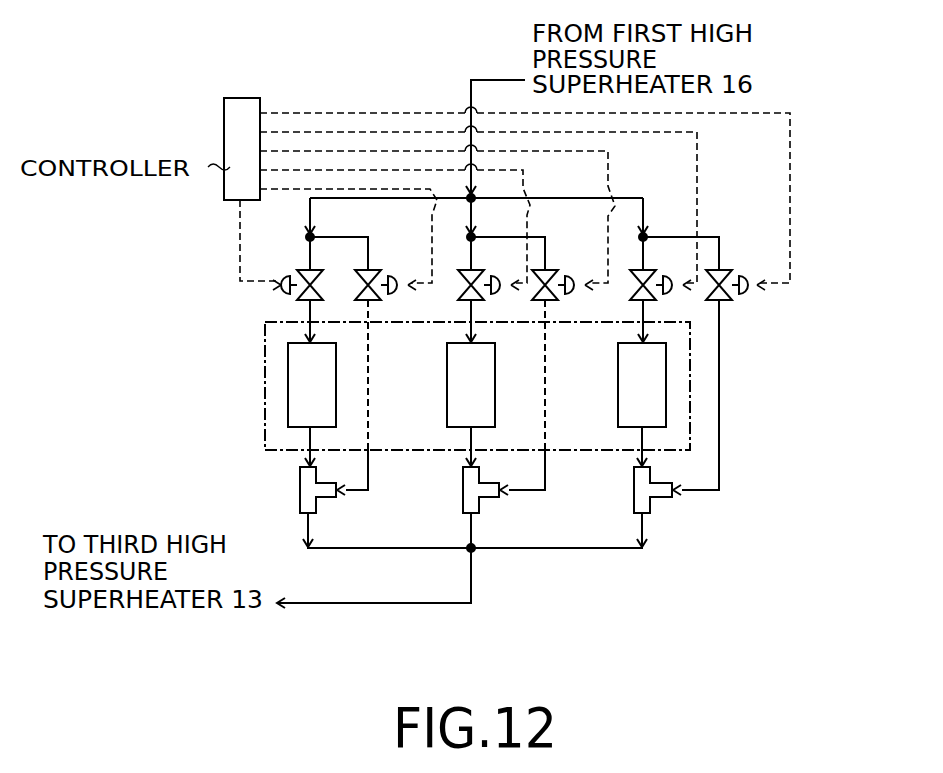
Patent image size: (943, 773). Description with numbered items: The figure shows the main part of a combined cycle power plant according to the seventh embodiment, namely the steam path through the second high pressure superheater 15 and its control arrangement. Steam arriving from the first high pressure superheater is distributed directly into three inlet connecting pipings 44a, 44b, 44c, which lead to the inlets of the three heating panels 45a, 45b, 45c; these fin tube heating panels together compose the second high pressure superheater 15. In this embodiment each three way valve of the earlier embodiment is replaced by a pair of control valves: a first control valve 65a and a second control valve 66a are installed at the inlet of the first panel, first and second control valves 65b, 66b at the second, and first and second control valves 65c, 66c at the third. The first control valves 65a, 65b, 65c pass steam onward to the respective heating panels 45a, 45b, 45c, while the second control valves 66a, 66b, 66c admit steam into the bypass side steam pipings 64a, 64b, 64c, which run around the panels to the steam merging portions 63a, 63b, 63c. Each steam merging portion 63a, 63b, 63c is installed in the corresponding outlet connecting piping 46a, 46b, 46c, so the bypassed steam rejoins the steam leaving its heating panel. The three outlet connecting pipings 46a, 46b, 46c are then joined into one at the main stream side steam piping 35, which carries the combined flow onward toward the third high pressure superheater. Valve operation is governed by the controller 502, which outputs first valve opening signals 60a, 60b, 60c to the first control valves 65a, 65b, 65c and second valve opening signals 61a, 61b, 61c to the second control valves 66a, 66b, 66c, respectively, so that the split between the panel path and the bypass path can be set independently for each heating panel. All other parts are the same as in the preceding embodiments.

The controller 502 is at (222, 124).
The second valve opening signal 61a is at (290, 190).
The second valve opening signal 61b is at (340, 150).
The second valve opening signal 61c is at (395, 112).
The first valve opening signal 60a is at (240, 250).
The first valve opening signal 60b is at (527, 173).
The first valve opening signal 60c is at (698, 167).
The inlet connecting piping 44a is at (312, 210).
The inlet connecting piping 44b is at (473, 208).
The inlet connecting piping 44c is at (645, 203).
The first control valve 65a is at (293, 274).
The first control valve 65b is at (484, 272).
The first control valve 65c is at (656, 274).
The second control valve 66a is at (382, 266).
The second control valve 66b is at (566, 268).
The second control valve 66c is at (734, 278).
The heating panel 45a is at (312, 385).
The heating panel 45b is at (471, 385).
The heating panel 45c is at (642, 385).
The second high pressure superheater 15 is at (692, 396).
The bypass side steam piping 64a is at (370, 470).
The bypass side steam piping 64b is at (547, 468).
The bypass side steam piping 64c is at (721, 373).
The steam merging portion 63a is at (300, 493).
The steam merging portion 63b is at (463, 498).
The steam merging portion 63c is at (634, 497).
The outlet connecting piping 46a is at (310, 526).
The outlet connecting piping 46b is at (473, 526).
The outlet connecting piping 46c is at (644, 531).
The main stream side steam piping 35 is at (473, 580).